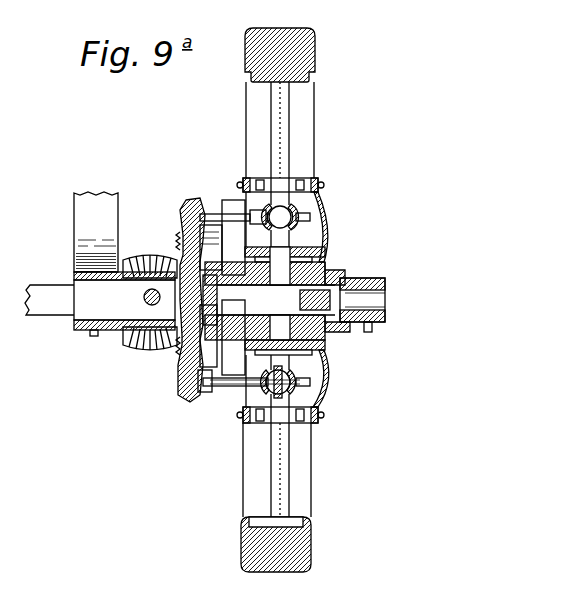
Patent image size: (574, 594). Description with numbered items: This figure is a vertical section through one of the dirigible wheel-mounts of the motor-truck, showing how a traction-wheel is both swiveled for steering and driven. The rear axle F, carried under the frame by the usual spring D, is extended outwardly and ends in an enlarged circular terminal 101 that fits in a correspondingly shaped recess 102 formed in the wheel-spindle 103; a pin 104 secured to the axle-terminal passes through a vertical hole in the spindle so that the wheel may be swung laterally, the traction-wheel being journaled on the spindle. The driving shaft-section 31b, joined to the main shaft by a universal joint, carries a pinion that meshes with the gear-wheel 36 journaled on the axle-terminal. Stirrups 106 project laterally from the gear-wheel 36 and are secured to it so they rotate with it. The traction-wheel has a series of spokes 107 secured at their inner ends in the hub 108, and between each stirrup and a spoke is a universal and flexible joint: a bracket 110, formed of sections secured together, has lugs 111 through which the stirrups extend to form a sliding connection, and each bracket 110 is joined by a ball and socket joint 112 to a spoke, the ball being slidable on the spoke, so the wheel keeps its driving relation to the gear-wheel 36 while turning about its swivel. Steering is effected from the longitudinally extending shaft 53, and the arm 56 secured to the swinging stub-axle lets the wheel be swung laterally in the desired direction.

The spring D is at (105, 214).
The rear axle F is at (43, 290).
The longitudinally extending shaft 53 is at (148, 258).
The shaft-section 31b is at (148, 306).
The gear-wheel 36 is at (187, 392).
The stirrup 106 is at (232, 210).
The spoke 107 is at (290, 160).
The bracket 110 is at (292, 206).
The lug 111 is at (300, 400).
The ball and socket joint 112 is at (330, 228).
The enlarged circular terminal 101 is at (300, 290).
The recess 102 is at (345, 280).
The arm 56 is at (387, 284).
The wheel-spindle 103 is at (322, 338).
The pin 104 is at (325, 348).
The hub 108 is at (325, 362).